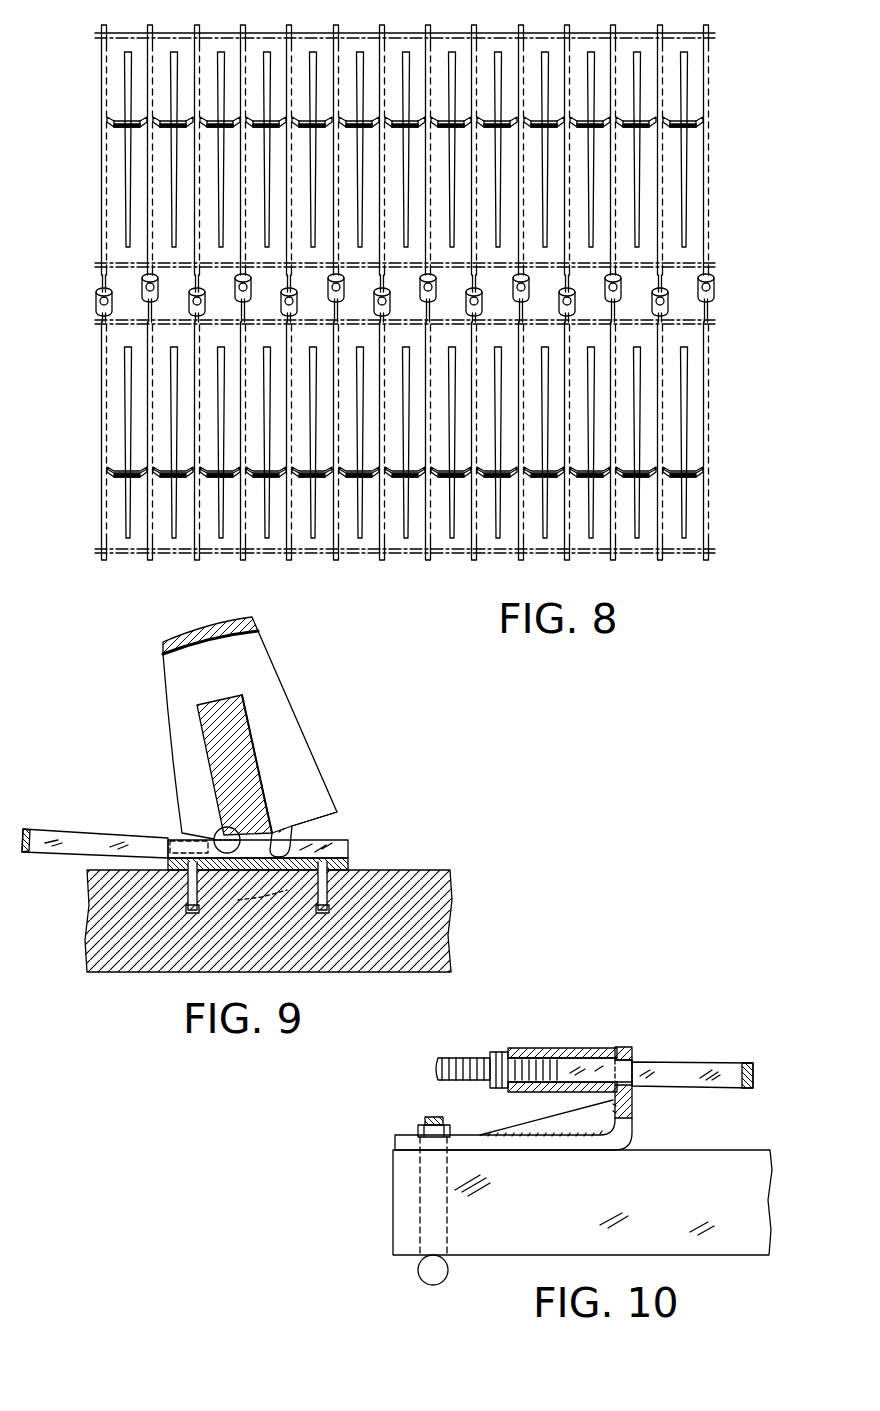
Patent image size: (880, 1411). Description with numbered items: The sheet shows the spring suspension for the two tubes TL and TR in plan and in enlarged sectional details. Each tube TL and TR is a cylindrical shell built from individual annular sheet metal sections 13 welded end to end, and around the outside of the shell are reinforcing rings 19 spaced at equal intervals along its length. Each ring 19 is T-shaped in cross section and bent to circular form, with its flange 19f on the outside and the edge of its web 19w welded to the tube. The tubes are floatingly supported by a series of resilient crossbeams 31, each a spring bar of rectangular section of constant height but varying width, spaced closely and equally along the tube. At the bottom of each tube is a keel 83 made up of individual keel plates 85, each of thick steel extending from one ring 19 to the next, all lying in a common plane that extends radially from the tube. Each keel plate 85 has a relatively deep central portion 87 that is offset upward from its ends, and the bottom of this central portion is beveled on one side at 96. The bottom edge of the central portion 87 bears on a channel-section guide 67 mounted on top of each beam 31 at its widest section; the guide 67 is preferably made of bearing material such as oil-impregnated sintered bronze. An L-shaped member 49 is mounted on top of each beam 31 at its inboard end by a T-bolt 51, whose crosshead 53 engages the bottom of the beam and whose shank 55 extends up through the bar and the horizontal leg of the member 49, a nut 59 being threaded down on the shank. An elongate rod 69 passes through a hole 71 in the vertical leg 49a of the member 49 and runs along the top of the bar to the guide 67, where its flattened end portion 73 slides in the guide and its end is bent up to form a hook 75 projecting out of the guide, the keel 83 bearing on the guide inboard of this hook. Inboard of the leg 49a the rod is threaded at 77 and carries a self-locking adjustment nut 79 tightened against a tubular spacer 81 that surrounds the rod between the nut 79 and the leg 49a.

In FIG. 8, the reinforcing ring 19 is at (246, 24).
In FIG. 8, the resilient crossbeam 31 is at (170, 50).
In FIG. 9, the resilient crossbeam 31 is at (92, 975).
In FIG. 10, the resilient crossbeam 31 is at (764, 1152).
In FIG. 8, the keel 83 is at (113, 128).
In FIG. 8, the tube TL is at (416, 30).
In FIG. 8, the tube TR is at (437, 562).
In FIG. 9, the annular sheet metal section 13 is at (191, 640).
In FIG. 9, the web 19w is at (257, 658).
In FIG. 9, the central portion 87 is at (246, 706).
In FIG. 9, the keel plate 85 is at (255, 745).
In FIG. 9, the flange 19f is at (330, 808).
In FIG. 9, the hook 75 is at (295, 824).
In FIG. 9, the channel-section guide 67 is at (350, 848).
In FIG. 9, the bevel 96 is at (232, 826).
In FIG. 9, the flattened end portion 73 is at (219, 840).
In FIG. 9, the elongate rod 69 is at (77, 830).
In FIG. 10, the elongate rod 69 is at (720, 1062).
In FIG. 10, the threaded portion 77 is at (452, 1057).
In FIG. 10, the self-locking adjustment nut 79 is at (498, 1050).
In FIG. 10, the tubular spacer 81 is at (546, 1048).
In FIG. 10, the vertical leg 49a is at (620, 1047).
In FIG. 10, the hole 71 is at (634, 1052).
In FIG. 10, the shank 55 is at (432, 1116).
In FIG. 10, the nut 59 is at (418, 1127).
In FIG. 10, the L-shaped member 49 is at (634, 1128).
In FIG. 10, the T-bolt 51 is at (416, 1198).
In FIG. 10, the crosshead 53 is at (435, 1285).